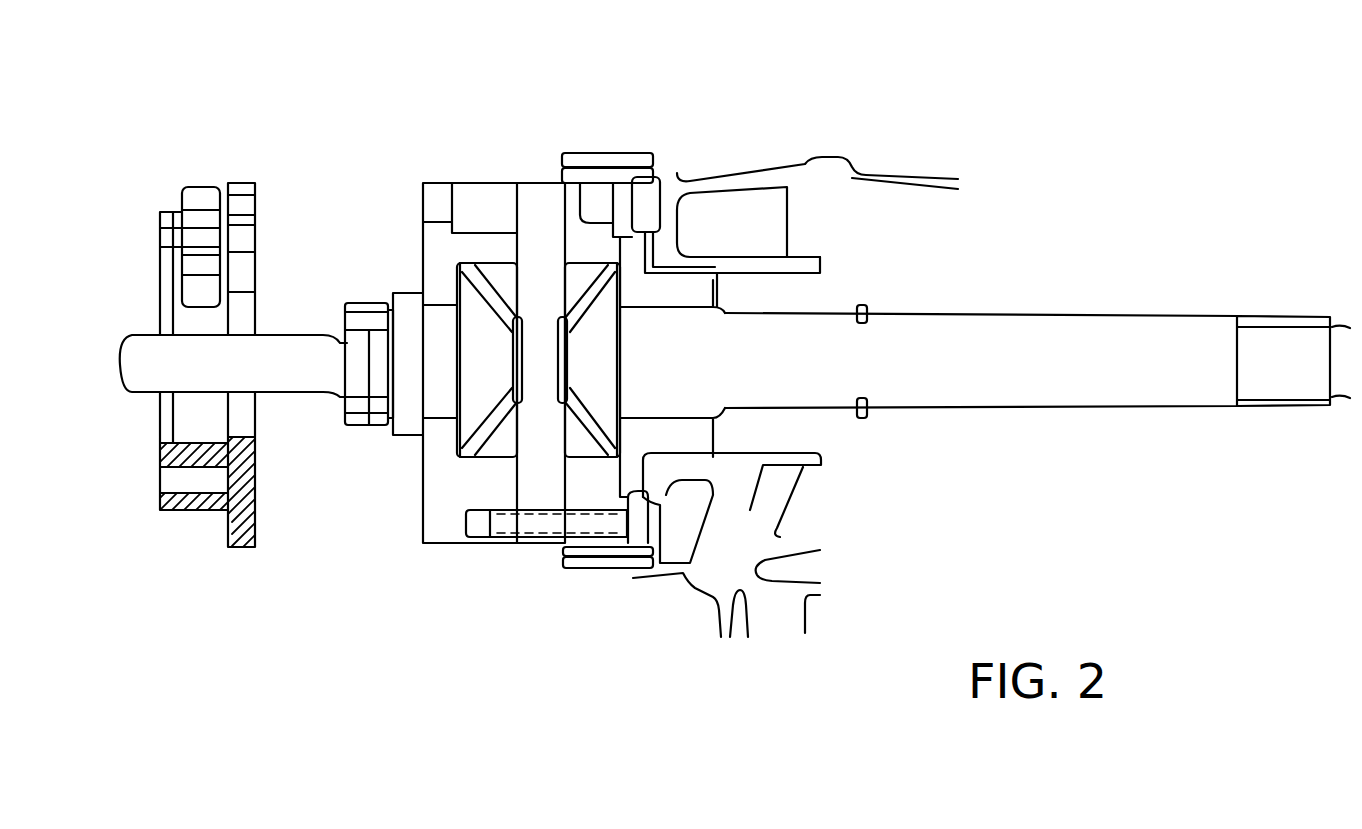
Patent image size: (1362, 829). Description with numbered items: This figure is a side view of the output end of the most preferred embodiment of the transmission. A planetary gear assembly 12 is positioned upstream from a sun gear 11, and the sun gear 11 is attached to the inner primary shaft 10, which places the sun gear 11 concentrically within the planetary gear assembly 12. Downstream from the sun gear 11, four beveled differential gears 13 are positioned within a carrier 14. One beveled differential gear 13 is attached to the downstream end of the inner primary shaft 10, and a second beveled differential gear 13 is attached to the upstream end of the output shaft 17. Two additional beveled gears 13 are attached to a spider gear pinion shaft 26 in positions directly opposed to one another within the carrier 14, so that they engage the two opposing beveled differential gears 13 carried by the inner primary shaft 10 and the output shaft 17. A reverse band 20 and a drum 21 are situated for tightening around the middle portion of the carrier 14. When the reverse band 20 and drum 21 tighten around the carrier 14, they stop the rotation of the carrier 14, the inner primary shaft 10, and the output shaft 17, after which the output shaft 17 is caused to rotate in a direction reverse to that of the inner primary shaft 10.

The inner primary shaft 10 is at (270, 358).
The sun gear 11 is at (370, 413).
The planetary gear assembly 12 is at (210, 187).
The beveled differential gears 13 is at (580, 272).
The carrier 14 is at (467, 184).
The output shaft 17 is at (1048, 347).
The reverse band 20 is at (647, 152).
The drum 21 is at (658, 172).
The spider gear pinion shaft 26 is at (532, 197).